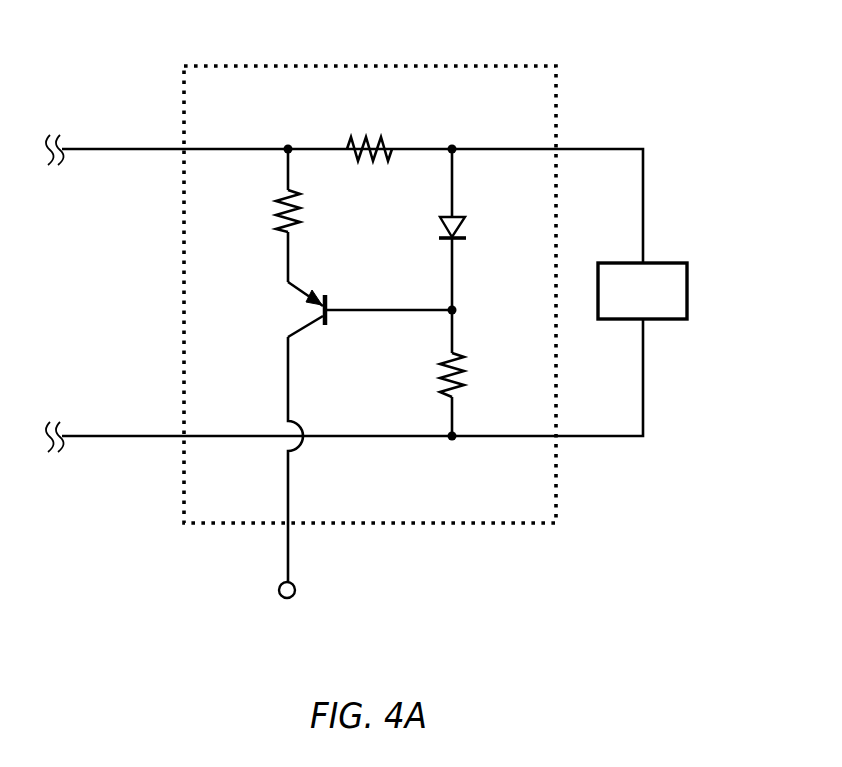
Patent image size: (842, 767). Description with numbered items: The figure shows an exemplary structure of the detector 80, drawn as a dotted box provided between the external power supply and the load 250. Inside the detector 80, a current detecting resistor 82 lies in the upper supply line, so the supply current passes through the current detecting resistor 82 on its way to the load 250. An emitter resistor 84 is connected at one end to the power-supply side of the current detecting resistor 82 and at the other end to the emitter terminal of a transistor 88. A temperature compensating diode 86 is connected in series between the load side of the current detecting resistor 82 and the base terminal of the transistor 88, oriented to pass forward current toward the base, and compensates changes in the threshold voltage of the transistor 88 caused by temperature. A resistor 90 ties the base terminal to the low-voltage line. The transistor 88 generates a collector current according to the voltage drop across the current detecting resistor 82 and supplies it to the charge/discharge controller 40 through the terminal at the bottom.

The detector 80 is at (370, 65).
The current detecting resistor 82 is at (380, 138).
The emitter resistor 84 is at (283, 213).
The temperature compensating diode 86 is at (465, 225).
The transistor 88 is at (331, 295).
The resistor 90 is at (465, 370).
The load 250 is at (688, 291).
The charge/discharge controller 40 is at (287, 610).